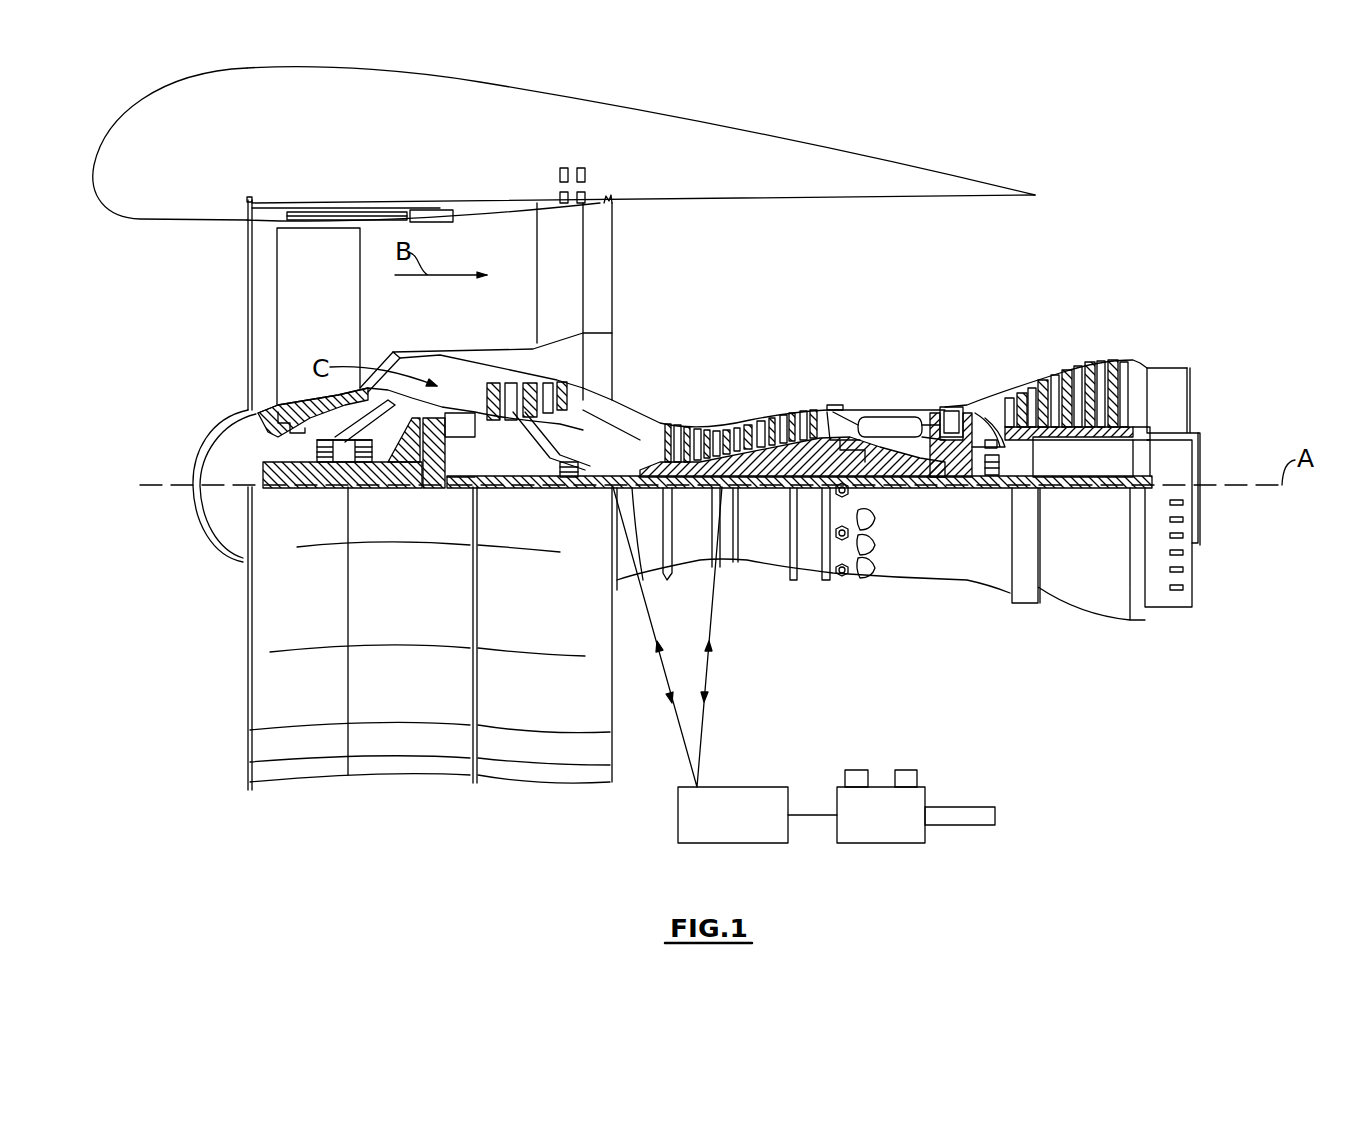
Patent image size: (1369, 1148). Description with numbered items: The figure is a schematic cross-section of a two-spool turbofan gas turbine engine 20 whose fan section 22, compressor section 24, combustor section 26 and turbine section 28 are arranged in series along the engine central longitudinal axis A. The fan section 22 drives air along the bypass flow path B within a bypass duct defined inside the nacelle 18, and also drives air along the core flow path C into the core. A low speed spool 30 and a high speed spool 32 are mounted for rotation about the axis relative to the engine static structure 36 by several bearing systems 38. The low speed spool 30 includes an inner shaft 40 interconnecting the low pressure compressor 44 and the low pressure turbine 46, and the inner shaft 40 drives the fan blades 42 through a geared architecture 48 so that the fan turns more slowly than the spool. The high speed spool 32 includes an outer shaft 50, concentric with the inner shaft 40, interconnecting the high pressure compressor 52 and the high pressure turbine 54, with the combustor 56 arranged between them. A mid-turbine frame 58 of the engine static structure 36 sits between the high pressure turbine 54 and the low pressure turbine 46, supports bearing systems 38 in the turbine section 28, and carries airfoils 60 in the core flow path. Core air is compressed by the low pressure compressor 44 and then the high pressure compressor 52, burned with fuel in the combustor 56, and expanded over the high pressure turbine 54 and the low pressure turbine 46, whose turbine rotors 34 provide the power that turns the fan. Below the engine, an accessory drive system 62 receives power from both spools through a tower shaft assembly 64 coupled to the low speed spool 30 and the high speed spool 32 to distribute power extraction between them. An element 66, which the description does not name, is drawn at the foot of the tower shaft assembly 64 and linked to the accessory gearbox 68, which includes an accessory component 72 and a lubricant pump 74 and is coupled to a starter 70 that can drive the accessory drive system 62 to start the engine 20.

The nacelle 18 is at (560, 117).
The gas turbine engine 20 is at (1068, 126).
The fan section 22 is at (455, 178).
The compressor section 24 is at (857, 326).
The combustor section 26 is at (933, 326).
The turbine section 28 is at (1142, 322).
The low speed spool 30 is at (768, 492).
The high speed spool 32 is at (812, 450).
The turbine rotors 34 is at (1100, 453).
The engine static structure 36 is at (810, 578).
The bearing systems 38 is at (324, 477).
The inner shaft 40 is at (638, 593).
The fan blades 42 is at (330, 331).
The low pressure compressor 44 is at (578, 343).
The low pressure turbine 46 is at (1077, 382).
The geared architecture 48 is at (435, 470).
The outer shaft 50 is at (890, 465).
The high pressure compressor 52 is at (741, 462).
The high pressure turbine 54 is at (950, 407).
The combustor 56 is at (887, 427).
The mid-turbine frame 58 is at (992, 392).
The airfoils 60 is at (1010, 447).
The accessory drive system 62 is at (1113, 418).
The tower shaft assembly 64 is at (1122, 381).
The sensor unit 66 is at (746, 826).
The accessory gearbox 68 is at (895, 826).
The starter 70 is at (967, 813).
The accessory component 72 is at (907, 780).
The lubricant pump 74 is at (853, 780).